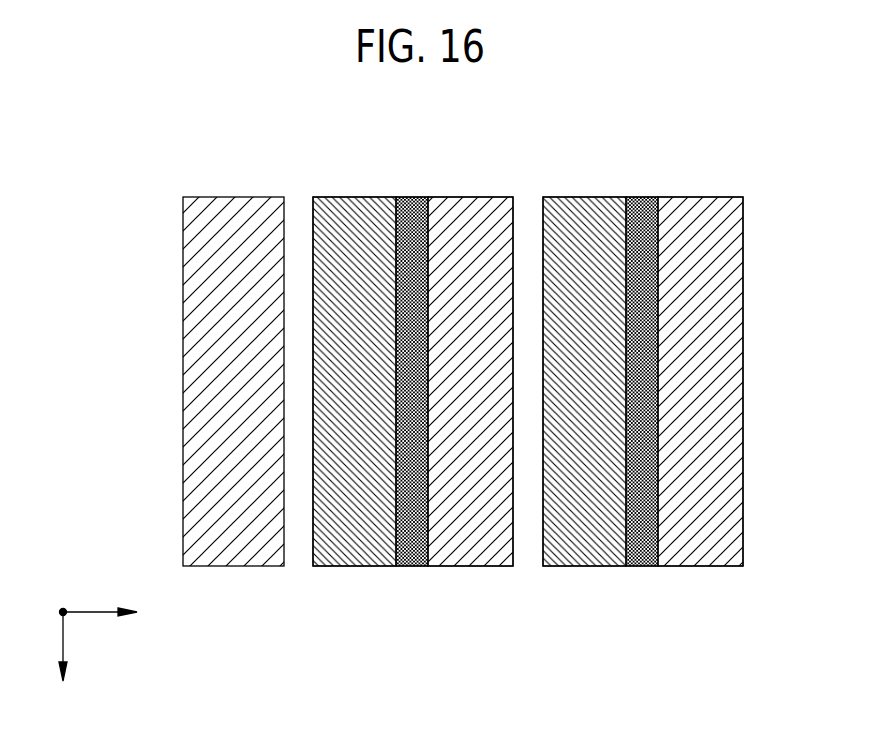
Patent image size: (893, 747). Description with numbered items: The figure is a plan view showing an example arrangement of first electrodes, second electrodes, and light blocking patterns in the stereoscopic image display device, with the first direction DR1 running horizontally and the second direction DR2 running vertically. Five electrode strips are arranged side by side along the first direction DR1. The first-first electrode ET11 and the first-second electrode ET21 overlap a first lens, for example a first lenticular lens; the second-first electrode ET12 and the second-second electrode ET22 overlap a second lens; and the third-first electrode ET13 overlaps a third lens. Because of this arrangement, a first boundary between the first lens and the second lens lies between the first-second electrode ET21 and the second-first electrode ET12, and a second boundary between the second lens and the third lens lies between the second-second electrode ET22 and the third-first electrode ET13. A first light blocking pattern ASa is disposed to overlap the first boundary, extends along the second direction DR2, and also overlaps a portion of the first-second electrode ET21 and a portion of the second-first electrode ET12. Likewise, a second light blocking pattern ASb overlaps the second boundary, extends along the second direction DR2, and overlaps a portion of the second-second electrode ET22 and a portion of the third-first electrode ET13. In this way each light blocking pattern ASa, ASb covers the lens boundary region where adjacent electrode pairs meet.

The first-first electrode ET11 is at (228, 566).
The first-second electrode ET21 is at (352, 566).
The second-first electrode ET12 is at (472, 566).
The second-second electrode ET22 is at (586, 566).
The third-first electrode ET13 is at (706, 566).
The first light blocking pattern ASa is at (412, 197).
The second light blocking pattern ASb is at (642, 197).
The first direction DR1 is at (117, 613).
The second direction DR2 is at (64, 663).